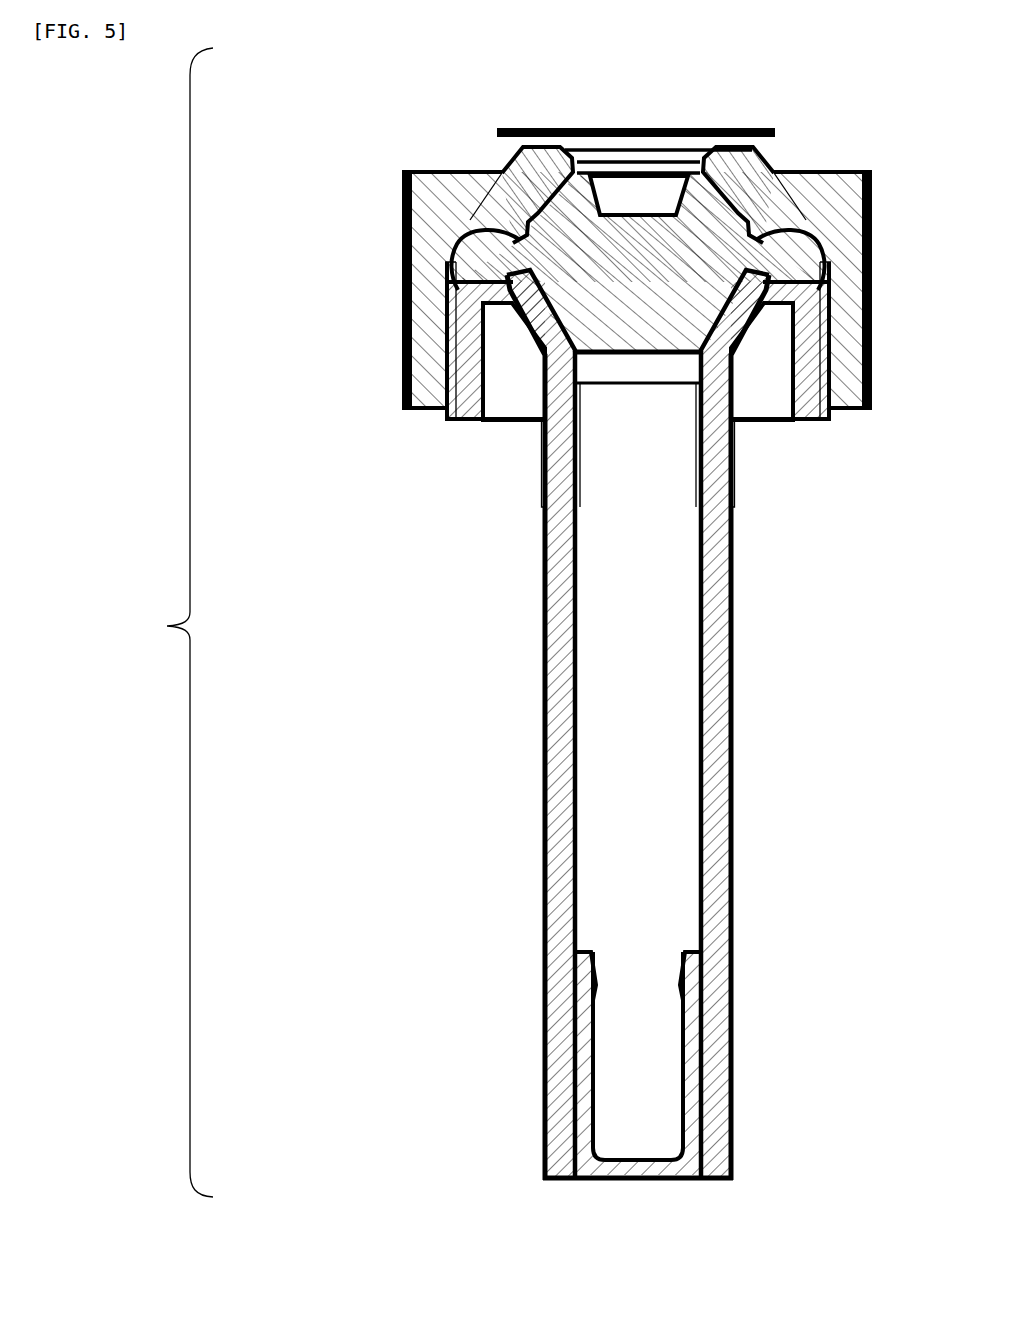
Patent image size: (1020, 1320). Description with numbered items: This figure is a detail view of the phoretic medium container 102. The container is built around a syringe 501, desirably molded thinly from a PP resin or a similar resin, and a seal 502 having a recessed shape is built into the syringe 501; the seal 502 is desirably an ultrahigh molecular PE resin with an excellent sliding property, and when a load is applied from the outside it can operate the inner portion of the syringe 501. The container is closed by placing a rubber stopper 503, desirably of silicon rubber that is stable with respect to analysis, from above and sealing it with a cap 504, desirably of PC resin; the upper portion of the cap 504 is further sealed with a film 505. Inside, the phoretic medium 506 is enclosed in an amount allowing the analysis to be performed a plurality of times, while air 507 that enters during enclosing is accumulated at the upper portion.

The phoretic medium container 102 is at (160, 622).
The syringe 501 is at (543, 855).
The seal 502 is at (546, 1053).
The rubber stopper 503 is at (540, 224).
The cap 504 is at (407, 404).
The film 505 is at (764, 128).
The phoretic medium 506 is at (630, 652).
The air 507 is at (618, 375).